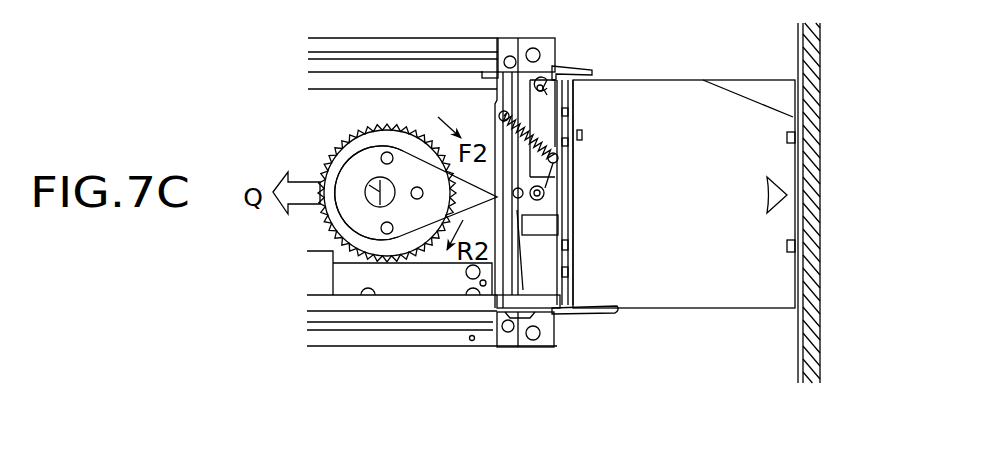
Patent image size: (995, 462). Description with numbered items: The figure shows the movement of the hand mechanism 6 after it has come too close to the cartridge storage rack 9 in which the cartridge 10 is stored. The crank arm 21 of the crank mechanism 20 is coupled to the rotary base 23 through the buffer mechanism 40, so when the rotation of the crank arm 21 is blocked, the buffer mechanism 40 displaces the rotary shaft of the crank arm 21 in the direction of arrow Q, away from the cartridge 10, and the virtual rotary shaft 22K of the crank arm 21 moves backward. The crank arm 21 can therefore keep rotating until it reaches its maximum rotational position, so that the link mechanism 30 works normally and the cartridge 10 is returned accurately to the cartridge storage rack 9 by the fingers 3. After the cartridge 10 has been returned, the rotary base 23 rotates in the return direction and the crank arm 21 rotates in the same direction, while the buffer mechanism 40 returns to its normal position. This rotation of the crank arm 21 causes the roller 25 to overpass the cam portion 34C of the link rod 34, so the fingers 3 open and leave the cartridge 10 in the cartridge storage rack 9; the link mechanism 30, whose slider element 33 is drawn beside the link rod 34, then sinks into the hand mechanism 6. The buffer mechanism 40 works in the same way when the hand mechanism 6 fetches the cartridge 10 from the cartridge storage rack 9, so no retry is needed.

The fingers 3 is at (593, 314).
The hand mechanism 6 is at (480, 33).
The cartridge storage rack 9 is at (810, 197).
The cartridge 10 is at (686, 108).
The crank mechanism 20 is at (436, 174).
The crank arm 21 is at (417, 220).
The virtual rotary shaft 22K is at (380, 192).
The rotary base 23 is at (353, 133).
The roller 25 is at (527, 176).
The link mechanism 30 is at (589, 185).
The slider 33 is at (570, 200).
The link rod 34 is at (545, 123).
The cam portion 34C is at (523, 225).
The buffer mechanism 40 is at (331, 224).